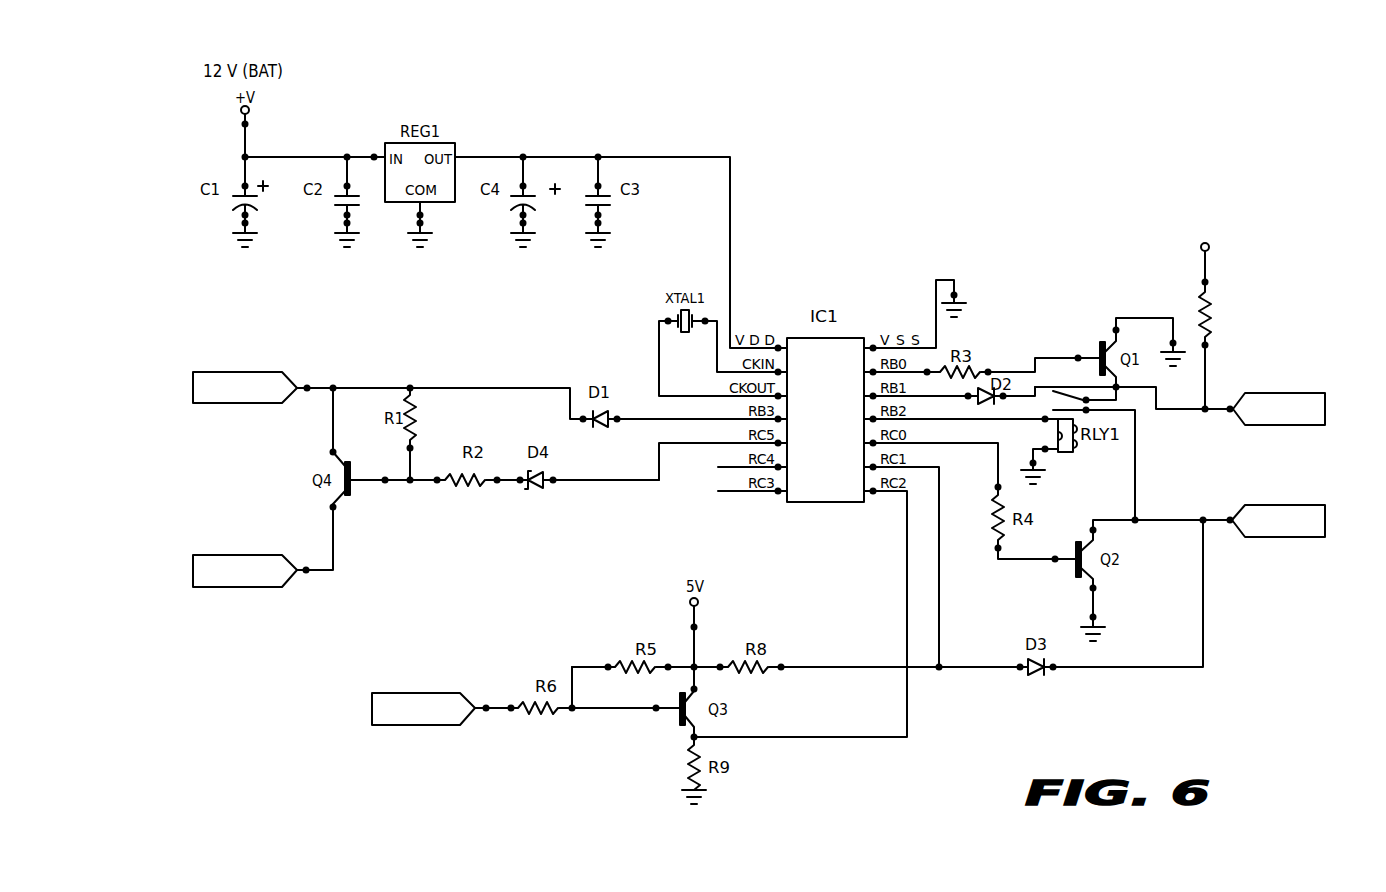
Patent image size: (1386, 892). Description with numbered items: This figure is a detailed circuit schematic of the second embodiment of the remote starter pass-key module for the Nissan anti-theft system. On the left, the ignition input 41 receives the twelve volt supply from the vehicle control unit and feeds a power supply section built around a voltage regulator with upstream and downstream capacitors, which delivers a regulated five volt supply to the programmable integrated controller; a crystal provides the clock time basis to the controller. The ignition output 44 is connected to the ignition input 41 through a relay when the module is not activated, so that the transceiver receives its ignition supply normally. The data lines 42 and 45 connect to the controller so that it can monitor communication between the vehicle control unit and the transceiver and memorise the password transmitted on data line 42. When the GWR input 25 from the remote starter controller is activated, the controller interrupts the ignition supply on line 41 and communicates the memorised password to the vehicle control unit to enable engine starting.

The ignition output 41 is at (240, 372).
The data line 42 is at (1287, 393).
The ignition output line to transceiver 44 is at (240, 555).
The data key line 45 is at (1287, 505).
The GWR output 25 is at (418, 693).